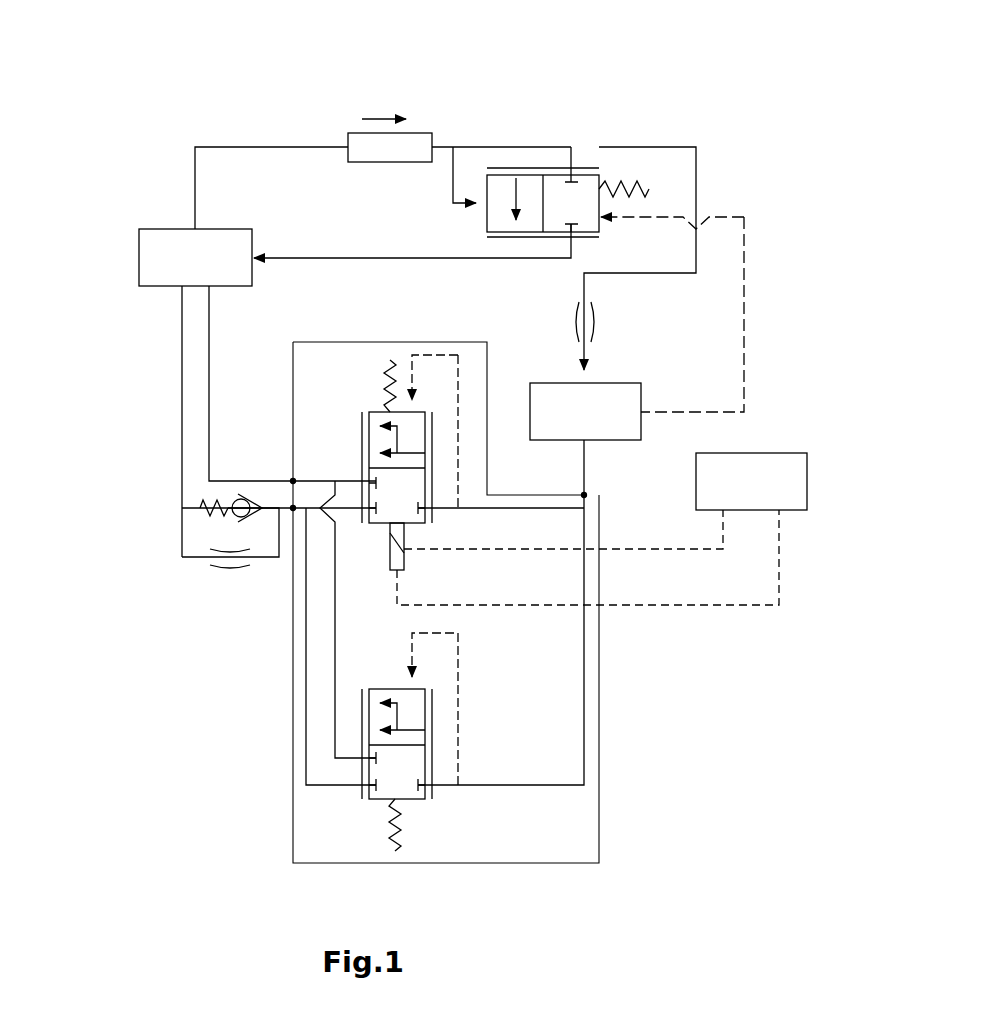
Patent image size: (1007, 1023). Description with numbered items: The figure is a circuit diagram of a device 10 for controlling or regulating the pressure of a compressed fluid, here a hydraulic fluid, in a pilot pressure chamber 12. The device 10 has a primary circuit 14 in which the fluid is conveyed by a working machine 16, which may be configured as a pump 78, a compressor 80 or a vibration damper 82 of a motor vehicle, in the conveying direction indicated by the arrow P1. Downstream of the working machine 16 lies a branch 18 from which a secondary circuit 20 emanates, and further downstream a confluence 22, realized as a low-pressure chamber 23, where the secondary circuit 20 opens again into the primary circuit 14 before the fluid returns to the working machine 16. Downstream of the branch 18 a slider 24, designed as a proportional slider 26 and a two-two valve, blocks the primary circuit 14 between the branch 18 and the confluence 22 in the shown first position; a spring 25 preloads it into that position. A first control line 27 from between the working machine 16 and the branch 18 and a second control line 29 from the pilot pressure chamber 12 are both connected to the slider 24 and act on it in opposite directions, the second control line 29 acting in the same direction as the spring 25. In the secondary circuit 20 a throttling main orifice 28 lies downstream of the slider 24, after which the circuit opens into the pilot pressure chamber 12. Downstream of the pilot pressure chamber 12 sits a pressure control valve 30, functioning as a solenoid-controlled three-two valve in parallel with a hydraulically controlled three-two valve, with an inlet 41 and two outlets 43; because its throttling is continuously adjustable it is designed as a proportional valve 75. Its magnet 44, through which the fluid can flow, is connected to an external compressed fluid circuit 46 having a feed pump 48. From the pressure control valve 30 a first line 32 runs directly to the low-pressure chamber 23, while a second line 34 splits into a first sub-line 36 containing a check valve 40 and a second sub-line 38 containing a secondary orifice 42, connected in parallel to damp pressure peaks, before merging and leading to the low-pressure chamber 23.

The device 10 is at (127, 62).
The pilot pressure chamber 12 is at (568, 426).
The primary circuit 14 is at (298, 257).
The working machine 16 is at (439, 190).
The branch 18 is at (597, 139).
The secondary circuit 20 is at (578, 289).
The confluence 22 is at (171, 203).
The low-pressure chamber 23 is at (178, 272).
The slider 24 is at (542, 163).
The spring 25 is at (648, 190).
The proportional slider 26 is at (516, 172).
The first control line 27 is at (458, 168).
The main orifice 28 is at (594, 319).
The second control line 29 is at (745, 276).
The pressure control valve 30 is at (516, 602).
The first line 32 is at (211, 333).
The second line 34 is at (181, 368).
The first sub-line 36 is at (196, 506).
The second sub-line 38 is at (205, 559).
The check valve 40 is at (236, 495).
The inlet 41 is at (590, 493).
The secondary orifice 42 is at (232, 569).
The outlets 43 is at (296, 478).
The magnet 44 is at (404, 554).
The external compressed fluid circuit 46 is at (741, 607).
The feed pump 48 is at (735, 496).
The proportional valve 75 is at (600, 722).
The pump 78 is at (439, 190).
The compressor 80 is at (439, 190).
The vibration damper 82 is at (388, 163).
The arrow P1 is at (390, 117).